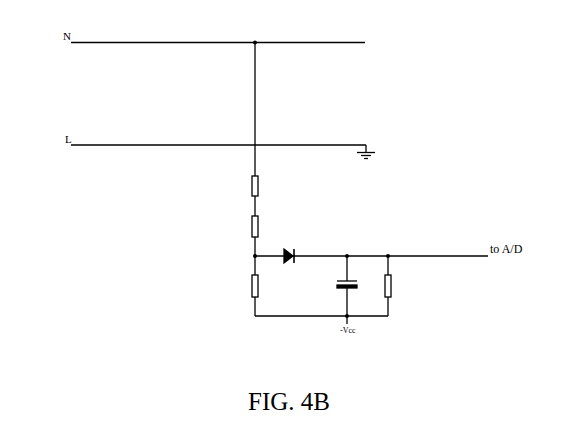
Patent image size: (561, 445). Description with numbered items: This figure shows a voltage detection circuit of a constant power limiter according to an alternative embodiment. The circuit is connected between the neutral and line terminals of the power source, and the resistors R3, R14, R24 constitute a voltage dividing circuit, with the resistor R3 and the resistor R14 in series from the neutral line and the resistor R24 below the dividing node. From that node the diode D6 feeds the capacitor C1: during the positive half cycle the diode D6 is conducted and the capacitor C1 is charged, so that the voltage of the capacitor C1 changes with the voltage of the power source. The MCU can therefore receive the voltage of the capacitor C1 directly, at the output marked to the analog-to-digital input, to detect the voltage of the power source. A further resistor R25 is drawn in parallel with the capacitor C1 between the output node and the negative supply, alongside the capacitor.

The resistor R3 is at (263, 186).
The resistor R14 is at (266, 226).
The resistor R24 is at (266, 286).
The resistor R25 is at (400, 286).
The diode D6 is at (285, 250).
The capacitor C1 is at (352, 290).